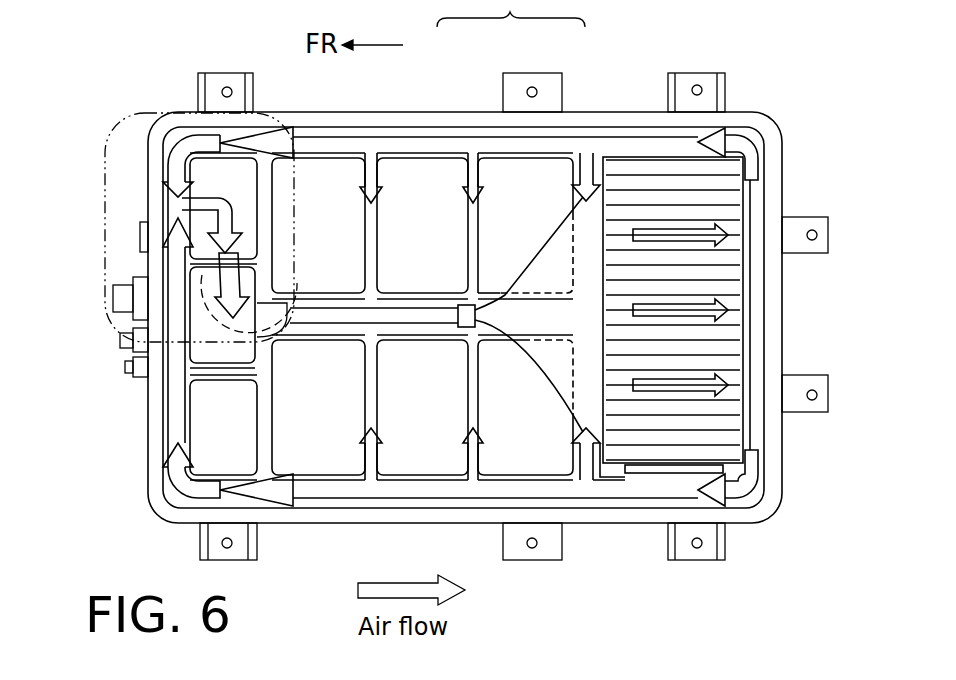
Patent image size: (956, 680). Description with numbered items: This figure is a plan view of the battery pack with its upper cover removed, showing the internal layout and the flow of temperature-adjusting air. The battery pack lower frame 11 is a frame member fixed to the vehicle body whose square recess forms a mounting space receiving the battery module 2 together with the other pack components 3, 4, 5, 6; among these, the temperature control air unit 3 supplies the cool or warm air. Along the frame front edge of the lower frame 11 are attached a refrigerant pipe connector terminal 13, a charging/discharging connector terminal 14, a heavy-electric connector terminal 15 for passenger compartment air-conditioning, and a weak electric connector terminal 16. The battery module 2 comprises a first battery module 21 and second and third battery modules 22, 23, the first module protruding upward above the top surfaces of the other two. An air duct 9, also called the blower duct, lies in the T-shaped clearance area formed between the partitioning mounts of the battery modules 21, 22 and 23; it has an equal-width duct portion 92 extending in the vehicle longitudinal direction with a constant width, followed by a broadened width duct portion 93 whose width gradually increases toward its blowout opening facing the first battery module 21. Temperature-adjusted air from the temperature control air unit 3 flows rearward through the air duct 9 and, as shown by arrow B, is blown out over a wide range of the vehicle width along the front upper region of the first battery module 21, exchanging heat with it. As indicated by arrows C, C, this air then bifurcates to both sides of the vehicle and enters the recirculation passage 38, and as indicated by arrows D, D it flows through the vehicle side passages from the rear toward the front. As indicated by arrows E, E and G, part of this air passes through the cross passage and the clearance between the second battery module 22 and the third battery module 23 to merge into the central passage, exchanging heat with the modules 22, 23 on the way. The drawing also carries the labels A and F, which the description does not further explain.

The battery module 2 is at (560, 240).
The temperature control air unit 3 is at (243, 208).
The pack component 4 is at (237, 352).
The pack component 5 is at (218, 428).
The pack component 6 is at (645, 473).
The air duct 9 is at (520, 311).
The battery pack lower frame 11 is at (602, 113).
The refrigerant pipe connector terminal 13 is at (140, 237).
The charging/discharging connector terminal 14 is at (133, 300).
The heavy-electric connector terminal 15 is at (120, 341).
The weak electric connector terminal 16 is at (125, 368).
The first battery module 21 is at (633, 210).
The second battery module 22 is at (413, 205).
The third battery module 23 is at (423, 365).
The recirculation passage 38 is at (748, 302).
The equal-width duct portion 92 is at (400, 308).
The broadened width duct portion 93 is at (527, 263).
The region A is at (97, 148).
The arrow B is at (693, 380).
The arrows C is at (745, 145).
The arrows D is at (380, 143).
The arrows E is at (585, 170).
The flow path F is at (478, 173).
The arrow G is at (372, 192).